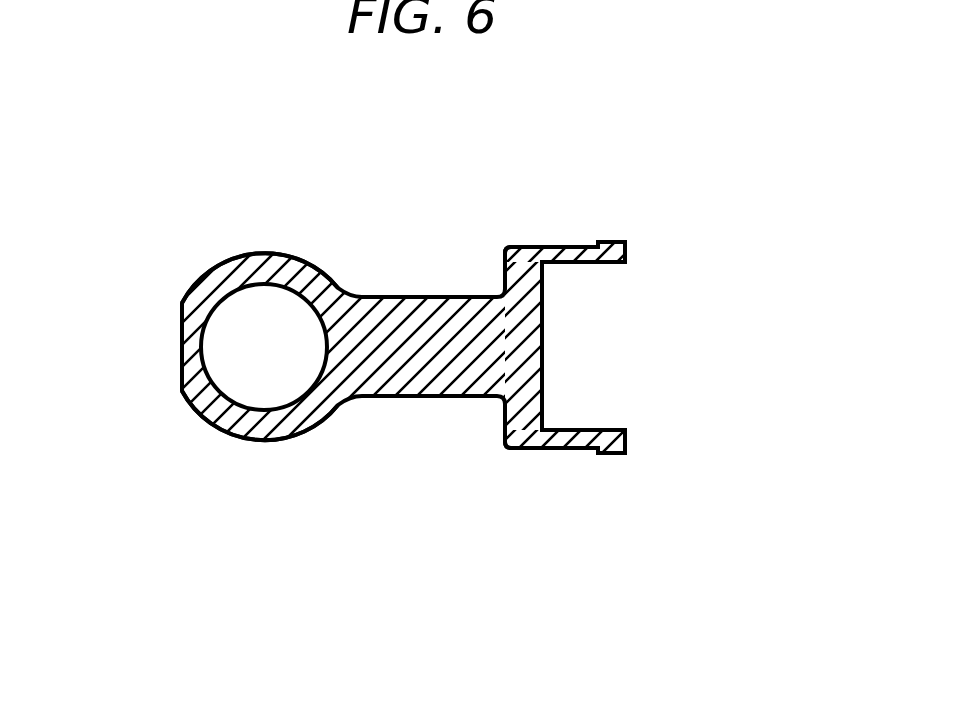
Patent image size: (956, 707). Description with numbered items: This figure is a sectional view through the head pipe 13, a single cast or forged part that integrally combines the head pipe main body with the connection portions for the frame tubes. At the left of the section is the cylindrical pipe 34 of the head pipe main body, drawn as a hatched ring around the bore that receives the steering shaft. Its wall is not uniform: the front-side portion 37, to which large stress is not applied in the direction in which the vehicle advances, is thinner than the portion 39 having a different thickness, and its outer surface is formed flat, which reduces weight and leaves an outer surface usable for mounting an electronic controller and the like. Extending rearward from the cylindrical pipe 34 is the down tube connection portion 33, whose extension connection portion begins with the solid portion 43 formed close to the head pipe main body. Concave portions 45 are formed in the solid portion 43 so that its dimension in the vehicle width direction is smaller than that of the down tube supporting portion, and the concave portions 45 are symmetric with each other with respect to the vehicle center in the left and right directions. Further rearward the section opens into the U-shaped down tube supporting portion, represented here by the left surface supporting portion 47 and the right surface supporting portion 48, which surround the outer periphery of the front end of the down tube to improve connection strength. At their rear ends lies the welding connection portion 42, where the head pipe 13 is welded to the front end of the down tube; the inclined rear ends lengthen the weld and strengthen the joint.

The head pipe 13 is at (393, 232).
The down tube connection portion 33 is at (482, 464).
The cylindrical pipe 34 is at (260, 242).
The front-side portion 37 is at (183, 355).
The portion having a different thickness 39 is at (263, 443).
The welding connection portion 42 is at (614, 454).
The solid portion 43 is at (427, 308).
The concave portions 45 is at (395, 397).
The left surface supporting portion 47 is at (551, 448).
The right surface supporting portion 48 is at (560, 247).